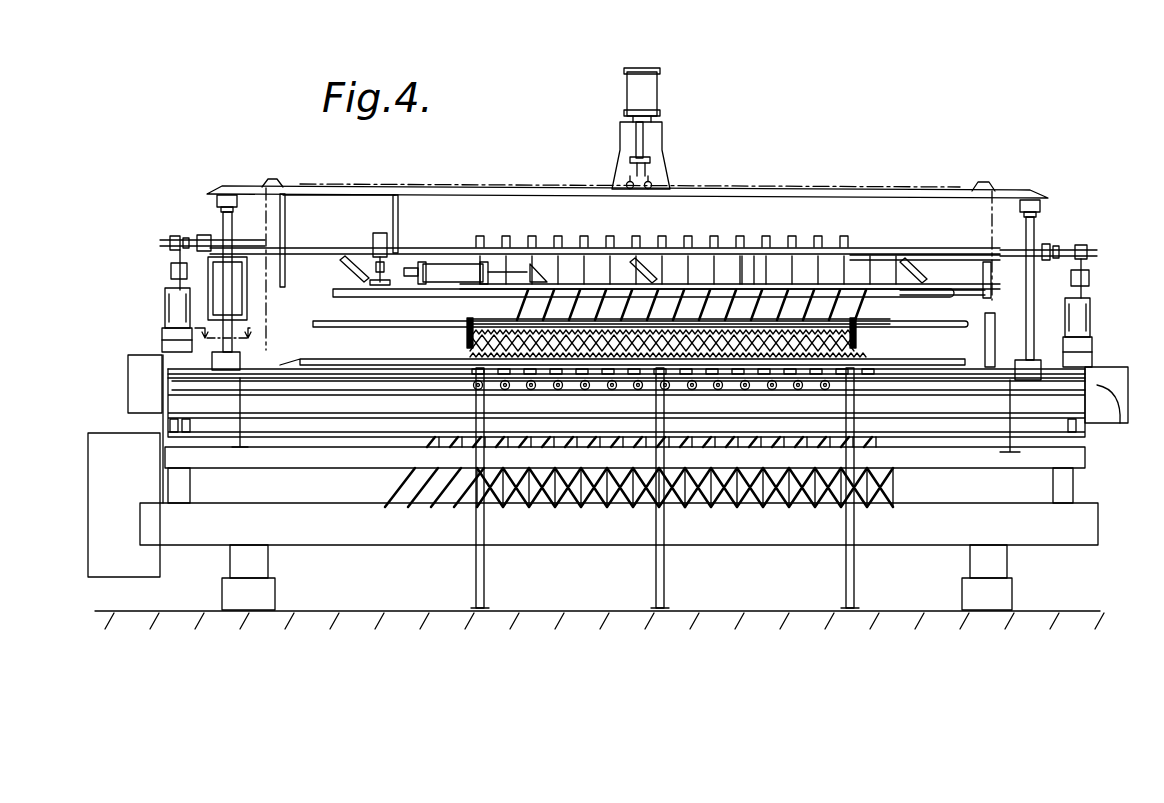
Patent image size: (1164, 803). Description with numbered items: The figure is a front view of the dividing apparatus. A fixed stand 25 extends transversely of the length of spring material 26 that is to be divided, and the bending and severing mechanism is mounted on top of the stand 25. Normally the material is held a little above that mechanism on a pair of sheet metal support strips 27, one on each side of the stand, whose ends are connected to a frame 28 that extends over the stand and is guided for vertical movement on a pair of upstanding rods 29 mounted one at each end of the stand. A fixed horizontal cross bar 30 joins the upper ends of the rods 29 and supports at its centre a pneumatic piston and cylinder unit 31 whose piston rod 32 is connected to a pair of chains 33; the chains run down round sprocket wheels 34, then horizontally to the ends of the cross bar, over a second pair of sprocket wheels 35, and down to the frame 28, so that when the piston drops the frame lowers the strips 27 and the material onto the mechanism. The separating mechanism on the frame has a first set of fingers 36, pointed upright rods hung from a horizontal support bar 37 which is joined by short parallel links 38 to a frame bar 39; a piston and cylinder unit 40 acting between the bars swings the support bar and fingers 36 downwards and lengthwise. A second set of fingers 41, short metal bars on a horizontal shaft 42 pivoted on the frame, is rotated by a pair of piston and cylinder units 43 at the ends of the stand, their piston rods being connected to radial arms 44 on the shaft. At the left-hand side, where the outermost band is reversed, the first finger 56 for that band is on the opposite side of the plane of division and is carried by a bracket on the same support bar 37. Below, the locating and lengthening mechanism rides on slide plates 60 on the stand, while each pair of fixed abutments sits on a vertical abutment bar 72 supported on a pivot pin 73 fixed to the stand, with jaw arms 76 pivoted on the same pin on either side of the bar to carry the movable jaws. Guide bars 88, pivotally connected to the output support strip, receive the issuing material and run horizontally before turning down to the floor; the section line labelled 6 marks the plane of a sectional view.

The section line 6- 6 is at (229, 305).
The fixed stand 25 is at (395, 413).
The length of spring material 26 is at (845, 363).
The sheet metal support strips 27 is at (380, 361).
The frame 28 is at (310, 320).
The upstanding rods 29 is at (221, 223).
The cross bar 30 is at (511, 192).
The pneumatic piston and cylinder unit 31 is at (648, 96).
The piston rod 32 is at (643, 141).
The chains 33 is at (347, 186).
The sprocket wheels 34 is at (627, 182).
The second pair of sprocket wheels 35 is at (279, 182).
The first set of fingers 36 is at (873, 305).
The support bar 37 is at (955, 292).
The parallel links 38 is at (350, 258).
The frame bar 39 is at (416, 256).
The pneumatic piston and cylinder unit 40 is at (452, 268).
The second set of fingers 41 is at (746, 276).
The horizontal shaft 42 is at (872, 249).
The pneumatic piston and cylinder units 43 is at (167, 312).
The radial arms 44 is at (178, 262).
The first finger 56 is at (480, 328).
The slide plates 60 is at (921, 367).
The abutment bar 72 is at (831, 512).
The pivot pin 73 is at (828, 391).
The jaw arms 76 is at (610, 510).
The guide bars 88 is at (486, 409).